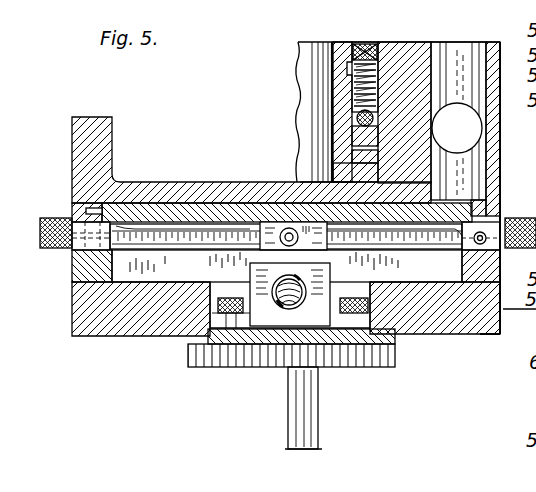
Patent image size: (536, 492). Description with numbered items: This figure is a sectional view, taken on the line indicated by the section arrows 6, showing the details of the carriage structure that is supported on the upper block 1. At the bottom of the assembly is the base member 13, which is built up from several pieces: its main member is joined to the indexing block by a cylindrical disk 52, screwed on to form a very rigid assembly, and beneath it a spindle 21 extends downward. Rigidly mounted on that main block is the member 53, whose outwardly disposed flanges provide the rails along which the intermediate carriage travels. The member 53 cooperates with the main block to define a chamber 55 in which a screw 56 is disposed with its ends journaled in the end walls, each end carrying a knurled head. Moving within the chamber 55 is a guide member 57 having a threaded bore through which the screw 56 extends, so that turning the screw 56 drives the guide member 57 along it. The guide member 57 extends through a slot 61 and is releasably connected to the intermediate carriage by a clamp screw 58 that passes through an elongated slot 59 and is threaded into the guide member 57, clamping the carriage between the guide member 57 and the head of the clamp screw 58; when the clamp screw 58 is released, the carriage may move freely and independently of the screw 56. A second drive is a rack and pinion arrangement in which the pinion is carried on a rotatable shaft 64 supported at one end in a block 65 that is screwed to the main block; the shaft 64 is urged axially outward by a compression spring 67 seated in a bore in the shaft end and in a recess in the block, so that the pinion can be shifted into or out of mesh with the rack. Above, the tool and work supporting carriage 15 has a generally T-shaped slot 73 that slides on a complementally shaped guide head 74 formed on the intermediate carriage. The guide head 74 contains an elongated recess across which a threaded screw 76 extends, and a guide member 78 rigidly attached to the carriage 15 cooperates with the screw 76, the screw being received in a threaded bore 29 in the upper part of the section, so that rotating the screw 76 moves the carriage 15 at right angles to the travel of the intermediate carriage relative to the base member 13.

The block 1 is at (505, 170).
The section line 6- 6 is at (378, 15).
The base member 13 is at (160, 340).
The tool and work supporting carriage 15 is at (308, 70).
The spindle 21 is at (310, 425).
The threaded bore 29 is at (372, 62).
The cylindrical disk 52 is at (395, 350).
The member 53 is at (150, 200).
The chamber 55 is at (193, 278).
The screw 56 is at (180, 240).
The guide member 57 is at (322, 249).
The clamp screw 58 is at (508, 333).
The elongated slot 59 is at (228, 226).
The slot 61 is at (137, 250).
The rotatable shaft 64 is at (284, 308).
The block 65 is at (243, 319).
The compression spring 67 is at (298, 306).
The T-shaped slot 73 is at (330, 66).
The guide head 74 is at (343, 125).
The threaded screw 76 is at (352, 131).
The guide member 78 is at (353, 90).